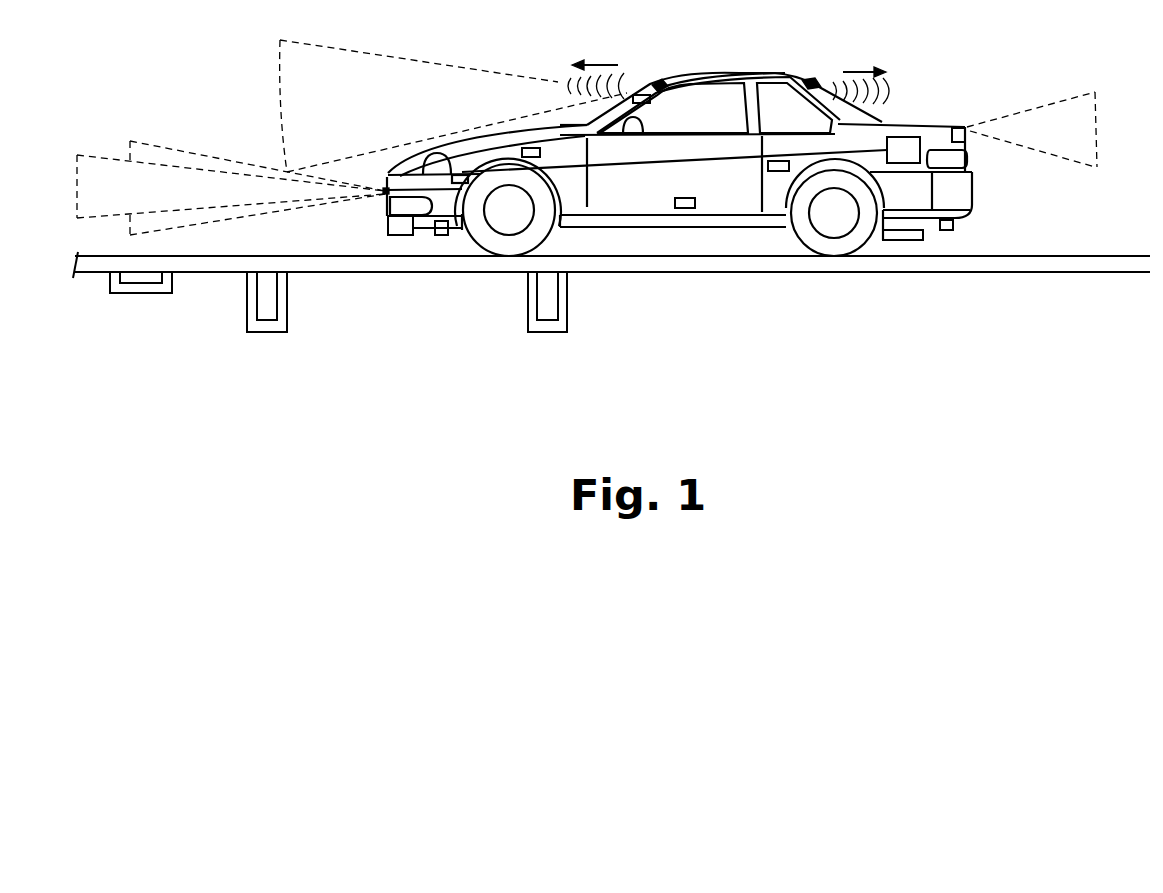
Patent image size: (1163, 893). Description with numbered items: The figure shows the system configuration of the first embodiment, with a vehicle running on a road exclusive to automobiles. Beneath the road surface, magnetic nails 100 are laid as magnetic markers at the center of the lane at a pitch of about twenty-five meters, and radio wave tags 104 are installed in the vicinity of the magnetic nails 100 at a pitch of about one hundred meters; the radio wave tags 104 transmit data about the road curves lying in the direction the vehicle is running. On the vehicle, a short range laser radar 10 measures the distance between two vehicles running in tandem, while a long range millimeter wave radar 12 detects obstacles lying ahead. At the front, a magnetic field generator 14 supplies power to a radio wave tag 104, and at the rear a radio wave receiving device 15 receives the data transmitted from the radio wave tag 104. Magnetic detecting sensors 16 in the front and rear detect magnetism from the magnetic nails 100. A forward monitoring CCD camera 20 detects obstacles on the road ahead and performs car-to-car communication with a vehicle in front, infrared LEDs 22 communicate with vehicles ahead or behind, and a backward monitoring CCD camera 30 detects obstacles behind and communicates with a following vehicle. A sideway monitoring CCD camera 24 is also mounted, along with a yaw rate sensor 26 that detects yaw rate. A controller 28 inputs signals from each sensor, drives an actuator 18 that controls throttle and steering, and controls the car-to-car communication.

The short range laser radar 10 is at (388, 203).
The long range millimeter wave radar 12 is at (387, 189).
The magnetic field generator 14 is at (388, 225).
The radio wave receiving device 15 is at (921, 245).
The magnetic detecting sensors 16 is at (442, 238).
The actuator 18 is at (525, 147).
The forward monitoring CCD camera 20 is at (640, 95).
The infrared LEDs 22 is at (662, 80).
The door sensor 24 is at (767, 166).
The yaw rate sensor 26 is at (674, 203).
The controller 28 is at (912, 136).
The backward monitoring CCD camera 30 is at (965, 127).
The magnetic nails 100 is at (278, 330).
The radio wave tags 104 is at (145, 290).